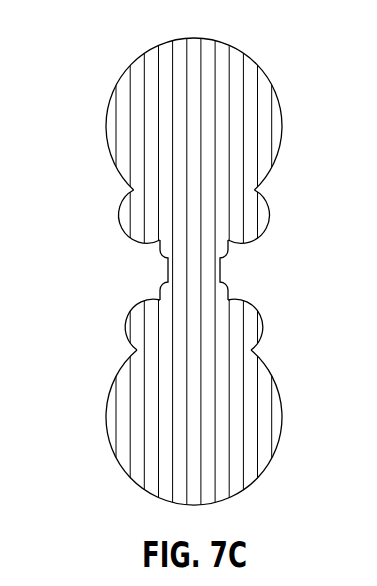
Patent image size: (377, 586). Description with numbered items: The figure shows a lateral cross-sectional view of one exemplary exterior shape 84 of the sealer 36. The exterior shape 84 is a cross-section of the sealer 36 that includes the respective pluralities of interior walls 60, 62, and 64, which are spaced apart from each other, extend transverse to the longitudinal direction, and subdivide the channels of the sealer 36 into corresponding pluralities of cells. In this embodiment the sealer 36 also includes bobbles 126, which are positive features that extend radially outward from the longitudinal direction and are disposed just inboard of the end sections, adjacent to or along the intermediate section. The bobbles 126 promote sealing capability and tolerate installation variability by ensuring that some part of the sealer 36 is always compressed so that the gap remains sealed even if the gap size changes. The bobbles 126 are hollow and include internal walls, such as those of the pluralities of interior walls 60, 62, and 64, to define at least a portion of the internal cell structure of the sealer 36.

The sealer 36 is at (181, 270).
The interior walls 60 is at (258, 363).
The interior walls 62 is at (214, 271).
The interior walls 64 is at (258, 74).
The exterior shape 84 is at (107, 417).
The bobbles 126 is at (257, 213).